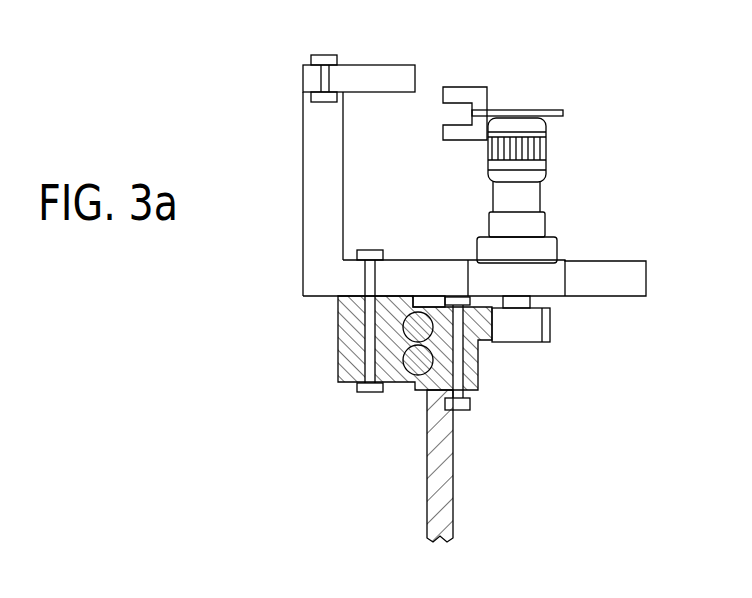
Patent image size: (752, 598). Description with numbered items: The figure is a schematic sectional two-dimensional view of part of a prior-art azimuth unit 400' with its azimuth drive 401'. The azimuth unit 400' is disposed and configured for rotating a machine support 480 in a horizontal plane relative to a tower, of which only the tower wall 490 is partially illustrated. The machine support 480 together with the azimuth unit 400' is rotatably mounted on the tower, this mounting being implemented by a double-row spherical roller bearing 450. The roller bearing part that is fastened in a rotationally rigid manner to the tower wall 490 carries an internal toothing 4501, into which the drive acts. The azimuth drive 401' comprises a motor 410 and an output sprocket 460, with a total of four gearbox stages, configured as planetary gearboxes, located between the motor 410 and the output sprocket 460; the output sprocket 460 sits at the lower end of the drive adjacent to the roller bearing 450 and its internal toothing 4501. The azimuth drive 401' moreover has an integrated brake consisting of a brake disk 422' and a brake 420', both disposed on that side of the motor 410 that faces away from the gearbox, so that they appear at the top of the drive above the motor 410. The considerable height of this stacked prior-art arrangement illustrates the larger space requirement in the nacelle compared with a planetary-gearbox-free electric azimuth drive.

The machine support 480 is at (382, 73).
The brake 420' is at (514, 94).
The brake disk 422' is at (561, 96).
The motor 410 is at (523, 150).
The azimuth drive 401' is at (573, 221).
The azimuth unit 400' is at (474, 387).
The double-row spherical roller bearing 450 is at (340, 365).
The internal toothing 4501 is at (488, 335).
The output sprocket 460 is at (525, 332).
The tower wall 490 is at (425, 470).